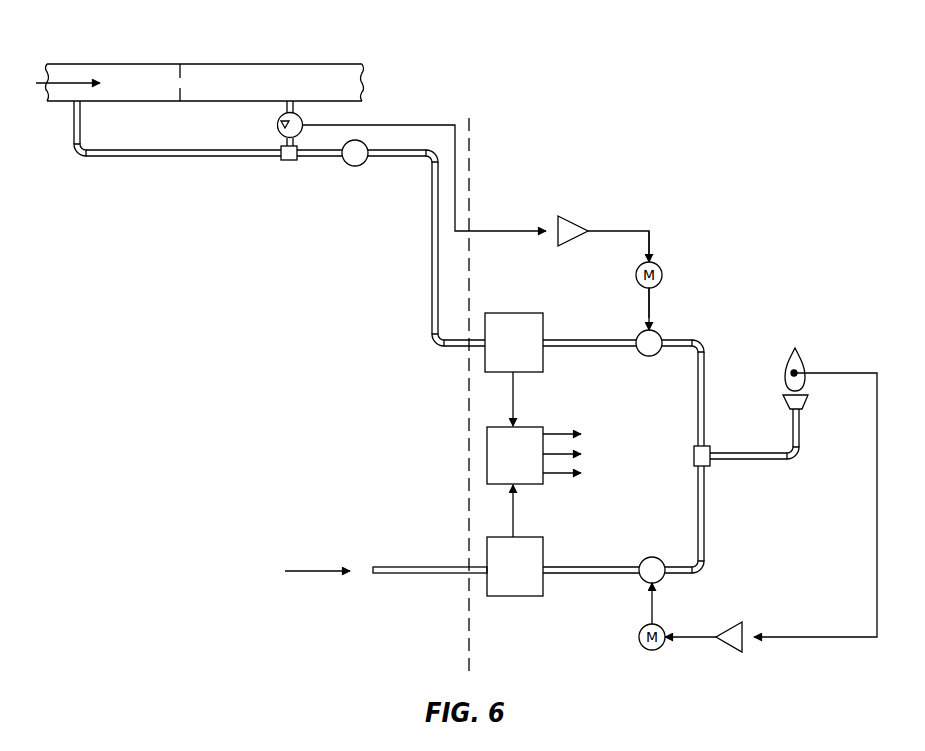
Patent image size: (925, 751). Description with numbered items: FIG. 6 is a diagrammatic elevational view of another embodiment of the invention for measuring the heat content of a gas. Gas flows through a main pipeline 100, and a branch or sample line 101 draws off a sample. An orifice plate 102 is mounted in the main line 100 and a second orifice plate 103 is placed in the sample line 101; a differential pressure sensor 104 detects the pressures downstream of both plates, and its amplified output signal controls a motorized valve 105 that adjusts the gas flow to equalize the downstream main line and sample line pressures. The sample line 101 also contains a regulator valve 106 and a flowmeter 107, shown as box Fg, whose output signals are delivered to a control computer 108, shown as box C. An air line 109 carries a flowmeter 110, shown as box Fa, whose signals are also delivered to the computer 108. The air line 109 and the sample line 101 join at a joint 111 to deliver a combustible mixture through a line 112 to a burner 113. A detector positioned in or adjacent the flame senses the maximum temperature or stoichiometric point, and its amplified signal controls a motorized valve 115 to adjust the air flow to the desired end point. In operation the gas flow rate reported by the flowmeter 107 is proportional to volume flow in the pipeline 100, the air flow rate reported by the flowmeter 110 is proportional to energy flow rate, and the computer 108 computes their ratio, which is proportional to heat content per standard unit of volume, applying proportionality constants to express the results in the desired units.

The main pipeline 100 is at (118, 64).
The sample line 101 is at (74, 126).
The orifice plate 102 is at (184, 65).
The orifice plate 103 is at (172, 150).
The differential pressure sensor 104 is at (278, 122).
The motorized valve 105 is at (650, 357).
The regulator valve 106 is at (357, 166).
The flowmeter 107 is at (513, 313).
The control computer 108 is at (536, 427).
The air line 109 is at (432, 567).
The flowmeter 110 is at (533, 537).
The joint 111 is at (708, 448).
The line 112 is at (748, 460).
The burner 113 is at (785, 404).
The motorized valve 115 is at (652, 557).